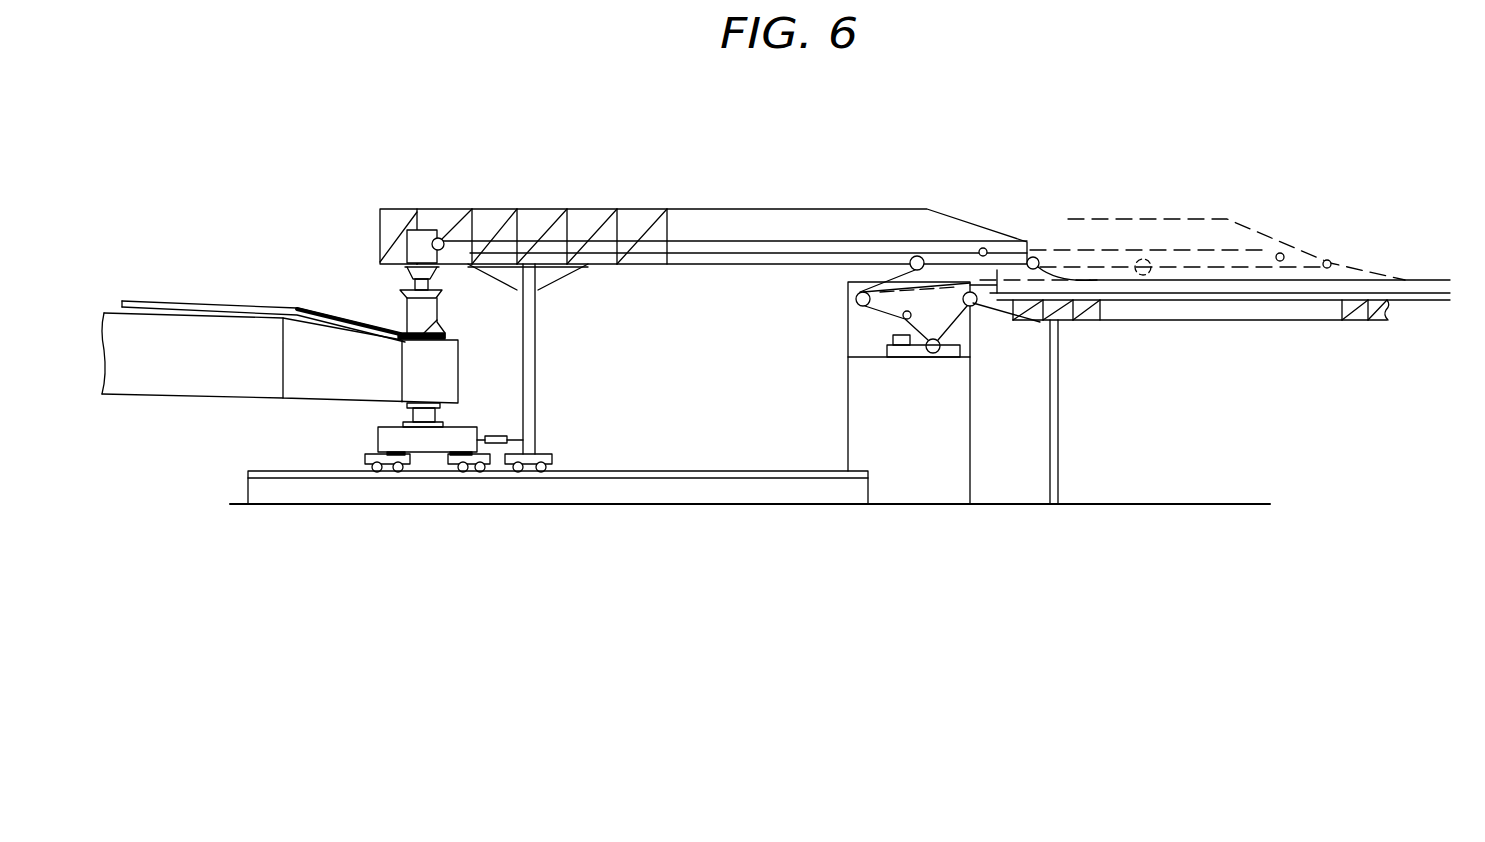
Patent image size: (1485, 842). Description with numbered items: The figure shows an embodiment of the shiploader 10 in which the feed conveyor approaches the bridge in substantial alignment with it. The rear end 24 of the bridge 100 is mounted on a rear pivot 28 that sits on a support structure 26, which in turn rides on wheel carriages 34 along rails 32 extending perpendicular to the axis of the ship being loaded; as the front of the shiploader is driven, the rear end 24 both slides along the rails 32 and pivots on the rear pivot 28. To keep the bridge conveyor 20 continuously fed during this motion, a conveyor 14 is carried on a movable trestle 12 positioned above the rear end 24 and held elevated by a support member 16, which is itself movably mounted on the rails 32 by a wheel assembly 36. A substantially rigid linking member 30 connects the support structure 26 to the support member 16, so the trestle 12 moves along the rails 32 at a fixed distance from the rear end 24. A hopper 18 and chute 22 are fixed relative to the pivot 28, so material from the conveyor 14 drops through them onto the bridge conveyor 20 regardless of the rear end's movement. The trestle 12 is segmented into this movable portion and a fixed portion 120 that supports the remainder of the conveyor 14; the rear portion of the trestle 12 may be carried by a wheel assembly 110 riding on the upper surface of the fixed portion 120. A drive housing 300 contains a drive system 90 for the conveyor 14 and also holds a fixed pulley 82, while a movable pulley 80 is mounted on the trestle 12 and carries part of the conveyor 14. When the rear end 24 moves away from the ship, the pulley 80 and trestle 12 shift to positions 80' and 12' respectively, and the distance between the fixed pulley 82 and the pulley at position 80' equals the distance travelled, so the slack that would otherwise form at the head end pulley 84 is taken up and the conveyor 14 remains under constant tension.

The shiploader 10 is at (272, 246).
The trestle 12 is at (703, 222).
The trestle position 12' is at (1215, 242).
The conveyor 14 is at (575, 240).
The support member 16 is at (537, 378).
The hopper 18 is at (407, 245).
The bridge conveyor 20 is at (360, 304).
The chute 22 is at (442, 310).
The rear end 24 is at (328, 399).
The support structure 26 is at (378, 437).
The rear pivot 28 is at (436, 413).
The linking member 30 is at (508, 437).
The rails 32 is at (729, 470).
The wheel carriages 34 is at (464, 472).
The wheel assembly 36 is at (541, 472).
The movable pulley 80 is at (1003, 237).
The movable pulley position 80' is at (1140, 233).
The fixed pulley 82 is at (856, 297).
The head end pulley 84 is at (441, 238).
The drive system 90 is at (908, 357).
The bridge 100 is at (162, 397).
The wheel assembly 110 is at (998, 308).
The fixed trestle portion 120 is at (1228, 322).
The drive housing 300 is at (848, 403).